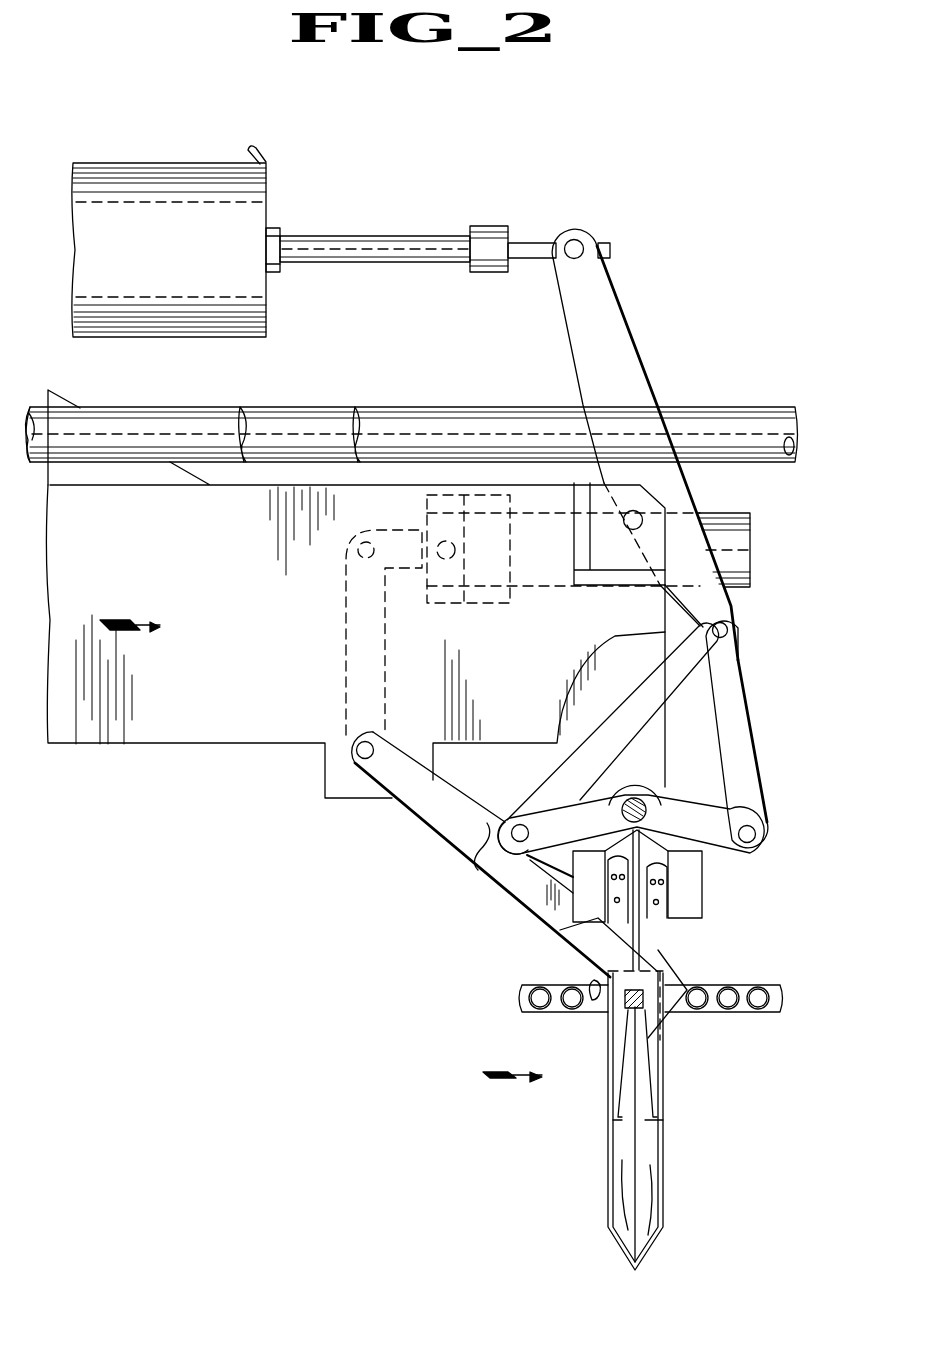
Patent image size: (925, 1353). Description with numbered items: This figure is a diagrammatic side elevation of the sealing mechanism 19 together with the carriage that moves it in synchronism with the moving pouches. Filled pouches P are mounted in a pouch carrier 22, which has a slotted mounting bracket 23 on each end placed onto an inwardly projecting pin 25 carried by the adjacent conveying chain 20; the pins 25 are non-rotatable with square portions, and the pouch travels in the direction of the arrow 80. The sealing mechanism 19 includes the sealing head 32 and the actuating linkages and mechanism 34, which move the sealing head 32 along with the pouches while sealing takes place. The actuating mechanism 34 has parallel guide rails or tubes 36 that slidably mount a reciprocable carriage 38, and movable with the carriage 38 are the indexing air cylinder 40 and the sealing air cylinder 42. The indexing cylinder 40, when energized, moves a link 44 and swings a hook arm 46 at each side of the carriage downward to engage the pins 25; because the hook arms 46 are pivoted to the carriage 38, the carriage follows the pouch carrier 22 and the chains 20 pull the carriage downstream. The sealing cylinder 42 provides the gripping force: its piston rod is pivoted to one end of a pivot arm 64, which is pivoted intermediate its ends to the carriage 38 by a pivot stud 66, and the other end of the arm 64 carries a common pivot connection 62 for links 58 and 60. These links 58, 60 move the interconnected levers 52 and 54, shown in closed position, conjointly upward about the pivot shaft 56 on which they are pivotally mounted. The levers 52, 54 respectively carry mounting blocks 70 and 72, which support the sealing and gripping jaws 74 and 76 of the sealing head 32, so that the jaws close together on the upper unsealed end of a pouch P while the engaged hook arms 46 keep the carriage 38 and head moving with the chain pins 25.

The sealing mechanism 19 is at (628, 186).
The sealing air cylinder 42 is at (195, 230).
The guide rails or tubes 36 is at (372, 408).
The carriage 38 is at (148, 541).
The pivot arm 64 is at (675, 488).
The indexing air cylinder 40 is at (750, 540).
The pivot stud 66 is at (628, 527).
The link 44 is at (346, 612).
The pivot connection 62 is at (728, 630).
The actuating linkages and mechanism 34 is at (748, 664).
The link 60 is at (742, 702).
The link 58 is at (660, 673).
The pivot shaft 56 is at (641, 805).
The lever 52 is at (568, 828).
The lever 54 is at (680, 839).
The mounting block 70 is at (588, 852).
The hook arm 46 is at (493, 873).
The sealing head 32 is at (576, 903).
The mounting block 72 is at (702, 887).
The sealing and gripping jaw 76 is at (660, 916).
The sealing and gripping jaw 74 is at (610, 897).
The inwardly projecting pin 25 is at (640, 990).
The conveying chain 20 is at (600, 1012).
The pouch carrier 22 is at (662, 1125).
The slotted mounting bracket 23 is at (652, 1068).
The pouch P is at (652, 1153).
The arrow 80 is at (512, 1082).